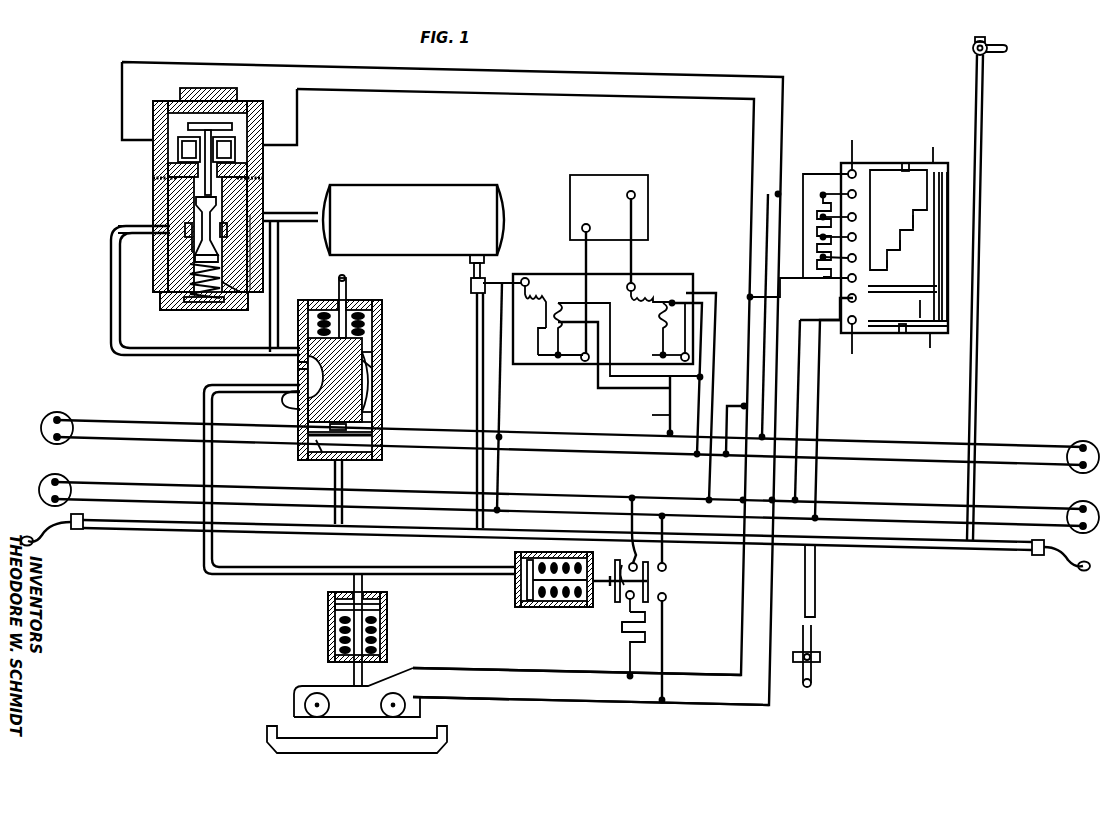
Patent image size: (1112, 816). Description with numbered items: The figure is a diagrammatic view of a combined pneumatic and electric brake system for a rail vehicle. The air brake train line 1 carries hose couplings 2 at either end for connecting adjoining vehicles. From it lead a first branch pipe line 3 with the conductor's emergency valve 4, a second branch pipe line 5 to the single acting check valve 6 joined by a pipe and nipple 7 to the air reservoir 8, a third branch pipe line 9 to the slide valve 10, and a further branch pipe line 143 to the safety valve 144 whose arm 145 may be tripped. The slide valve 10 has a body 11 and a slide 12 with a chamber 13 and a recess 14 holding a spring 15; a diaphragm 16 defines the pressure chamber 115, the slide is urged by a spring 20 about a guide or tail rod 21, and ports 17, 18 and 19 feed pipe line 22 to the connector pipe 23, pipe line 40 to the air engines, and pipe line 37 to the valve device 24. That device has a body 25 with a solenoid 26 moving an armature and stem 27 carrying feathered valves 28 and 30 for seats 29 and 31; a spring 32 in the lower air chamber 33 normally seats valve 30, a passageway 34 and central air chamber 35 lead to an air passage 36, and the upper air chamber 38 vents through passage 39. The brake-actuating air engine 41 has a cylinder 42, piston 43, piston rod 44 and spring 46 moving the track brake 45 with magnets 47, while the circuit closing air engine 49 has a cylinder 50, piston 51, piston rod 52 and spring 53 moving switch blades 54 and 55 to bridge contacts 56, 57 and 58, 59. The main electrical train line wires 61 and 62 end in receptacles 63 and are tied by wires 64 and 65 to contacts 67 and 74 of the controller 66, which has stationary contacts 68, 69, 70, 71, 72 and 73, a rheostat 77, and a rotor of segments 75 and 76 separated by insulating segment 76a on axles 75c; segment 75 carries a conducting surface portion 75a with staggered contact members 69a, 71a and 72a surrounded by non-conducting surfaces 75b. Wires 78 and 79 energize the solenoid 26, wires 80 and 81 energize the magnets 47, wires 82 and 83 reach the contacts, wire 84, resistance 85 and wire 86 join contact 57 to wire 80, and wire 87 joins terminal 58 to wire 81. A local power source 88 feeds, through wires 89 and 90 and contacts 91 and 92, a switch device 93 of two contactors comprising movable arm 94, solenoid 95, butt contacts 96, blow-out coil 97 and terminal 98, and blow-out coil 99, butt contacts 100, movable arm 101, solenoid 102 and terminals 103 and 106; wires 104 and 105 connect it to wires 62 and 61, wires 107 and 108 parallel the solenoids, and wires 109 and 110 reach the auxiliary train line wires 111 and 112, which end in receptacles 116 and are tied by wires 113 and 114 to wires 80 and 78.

The air brake train line 1 is at (360, 540).
The hose couplings 2 is at (54, 538).
The first branch pipe line 3 is at (976, 352).
The conductor's emergency valve 4 is at (972, 52).
The second branch pipe line 5 is at (476, 340).
The single acting check valve 6 is at (470, 289).
The pipe and nipple 7 is at (470, 262).
The air reservoir 8 is at (420, 188).
The third branch pipe line 9 is at (344, 481).
The slide valve 10 is at (322, 300).
The body 11 is at (382, 405).
The slide 12 is at (372, 340).
The chamber 13 is at (300, 360).
The recess 14 is at (374, 362).
The spring 15 is at (374, 384).
The diaphragm 16 is at (318, 452).
The port 17 is at (308, 424).
The port 18 is at (283, 404).
The port 19 is at (300, 372).
The spring 20 is at (372, 318).
The guide or tail rod 21 is at (348, 284).
The pipe line 22 is at (280, 256).
The connector pipe 23 is at (297, 212).
The valve device 24 is at (245, 104).
The body 25 is at (263, 185).
The solenoid 26 is at (180, 150).
The armature and stem 27 is at (232, 126).
The feathered valve 28 is at (195, 202).
The seat 29 is at (184, 222).
The feathered valve 30 is at (195, 258).
The seat 31 is at (250, 258).
The spring 32 is at (186, 305).
The lower air chamber 33 is at (212, 302).
The passageway 34 is at (238, 294).
The central air chamber 35 is at (190, 243).
The air passage 36 is at (116, 230).
The pipe line 37 is at (132, 362).
The upper air chamber 38 is at (175, 172).
The passage 39 is at (150, 185).
The pipe line 40 is at (202, 388).
The brake-actuating air engine 41 is at (328, 592).
The cylinder 42 is at (338, 626).
The piston 43 is at (380, 608).
The piston rod 44 is at (352, 672).
The track brake 45 is at (294, 695).
The spring 46 is at (340, 640).
The magnets 47 is at (306, 706).
The circuit closing air engine 49 is at (514, 560).
The cylinder 50 is at (565, 605).
The piston 51 is at (530, 606).
The piston rod 52 is at (612, 585).
The spring 53 is at (552, 606).
The switch blade 54 is at (628, 564).
The switch blade 55 is at (650, 580).
The contact 56 is at (628, 542).
The contact 57 is at (628, 610).
The terminal 58 is at (667, 598).
The contact 59 is at (666, 566).
The wire 61 is at (567, 500).
The wire 62 is at (550, 516).
The receptacles 63 is at (38, 490).
The wire 64 is at (794, 482).
The wire 65 is at (818, 478).
The controller 66 is at (876, 162).
The contact 67 is at (848, 160).
The contact 68 is at (846, 194).
The contact 69 is at (857, 218).
The contact member 69a is at (918, 222).
The contact 70 is at (857, 237).
The contact 71 is at (857, 257).
The contact member 71a is at (897, 250).
The contact 72 is at (848, 281).
The contact member 72a is at (880, 276).
The contact 73 is at (859, 300).
The contact 74 is at (857, 324).
The segment 75 is at (932, 288).
The conducting surface portion 75a is at (938, 176).
The non-conducting surfaces 75b is at (876, 192).
The axles 75c is at (905, 165).
The segment 76 is at (938, 330).
The insulating segment 76a is at (940, 298).
The rheostat 77 is at (811, 248).
The wire 78 is at (620, 76).
The wire 79 is at (604, 100).
The wire 80 is at (515, 672).
The wire 81 is at (582, 704).
The wire 82 is at (628, 506).
The wire 83 is at (666, 530).
The wire 84 is at (618, 630).
The resistance 85 is at (626, 649).
The wire 86 is at (644, 647).
The wire 87 is at (665, 632).
The local source of electrical power 88 is at (616, 176).
The wire 89 is at (584, 258).
The wire 90 is at (632, 256).
The contact 91 is at (582, 362).
The terminal 92 is at (636, 283).
The switch device 93 is at (670, 274).
The movable arm 94 is at (542, 352).
The solenoid 95 is at (559, 304).
The butt contacts 96 is at (538, 328).
The blow-out coil 97 is at (536, 290).
The terminal 98 is at (522, 268).
The blow-out coil 99 is at (654, 300).
The butt contacts 100 is at (655, 343).
The movable arm 101 is at (658, 357).
The solenoid 102 is at (656, 316).
The terminal 103 is at (698, 290).
The wire 104 is at (500, 410).
The wire 105 is at (712, 308).
The terminal 106 is at (690, 352).
The wire 107 is at (598, 303).
The wire 108 is at (612, 392).
The wire 109 is at (675, 418).
The wire 110 is at (660, 418).
The wire 111 is at (158, 440).
The wire 112 is at (160, 410).
The wire 113 is at (730, 404).
The wire 114 is at (766, 215).
The pressure chamber 115 is at (372, 442).
The receptacles 116 is at (70, 414).
The branch pipe line 143 is at (816, 598).
The safety valve 144 is at (820, 656).
The arm 145 is at (812, 685).